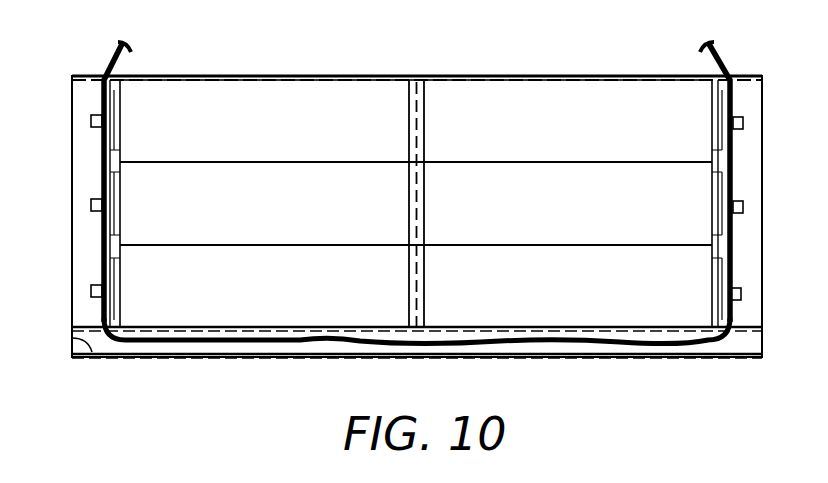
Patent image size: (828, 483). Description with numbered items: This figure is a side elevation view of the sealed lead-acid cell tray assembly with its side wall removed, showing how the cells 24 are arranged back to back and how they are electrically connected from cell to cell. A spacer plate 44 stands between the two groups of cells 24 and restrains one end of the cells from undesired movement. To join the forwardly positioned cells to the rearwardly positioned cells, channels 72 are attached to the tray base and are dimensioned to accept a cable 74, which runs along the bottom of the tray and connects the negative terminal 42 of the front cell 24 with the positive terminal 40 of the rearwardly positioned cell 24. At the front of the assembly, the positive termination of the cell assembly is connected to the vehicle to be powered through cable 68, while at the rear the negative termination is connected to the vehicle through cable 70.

The cell 24 is at (300, 132).
The positive terminal 40 is at (730, 282).
The negative terminal 42 is at (100, 278).
The spacer plate 44 is at (418, 80).
The cable 68 is at (108, 60).
The cable 70 is at (725, 64).
The channel 72 is at (72, 338).
The cable 74 is at (328, 342).